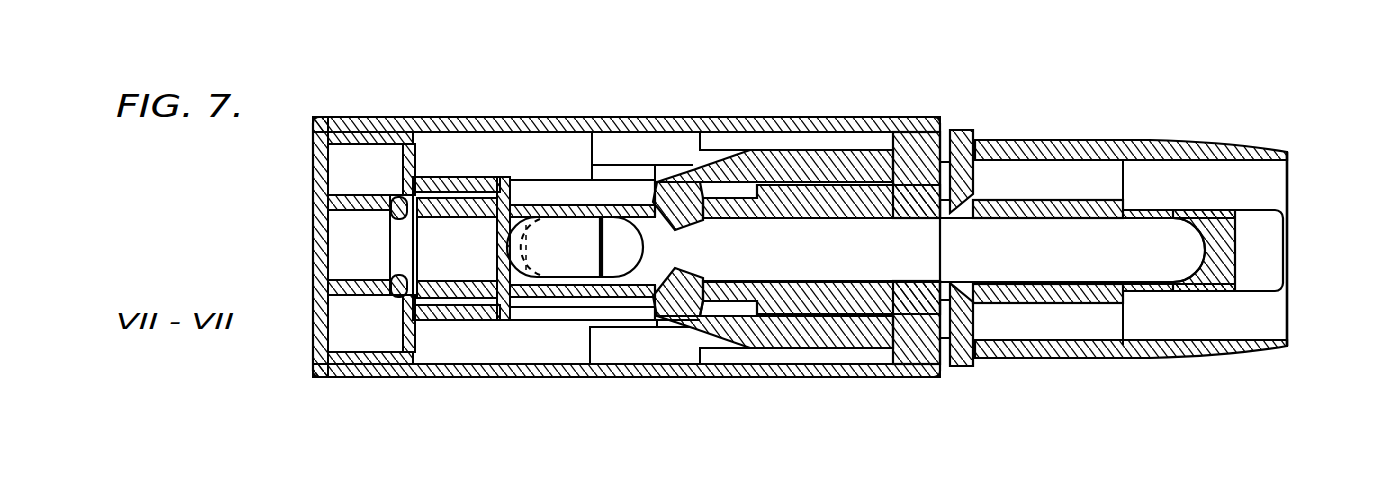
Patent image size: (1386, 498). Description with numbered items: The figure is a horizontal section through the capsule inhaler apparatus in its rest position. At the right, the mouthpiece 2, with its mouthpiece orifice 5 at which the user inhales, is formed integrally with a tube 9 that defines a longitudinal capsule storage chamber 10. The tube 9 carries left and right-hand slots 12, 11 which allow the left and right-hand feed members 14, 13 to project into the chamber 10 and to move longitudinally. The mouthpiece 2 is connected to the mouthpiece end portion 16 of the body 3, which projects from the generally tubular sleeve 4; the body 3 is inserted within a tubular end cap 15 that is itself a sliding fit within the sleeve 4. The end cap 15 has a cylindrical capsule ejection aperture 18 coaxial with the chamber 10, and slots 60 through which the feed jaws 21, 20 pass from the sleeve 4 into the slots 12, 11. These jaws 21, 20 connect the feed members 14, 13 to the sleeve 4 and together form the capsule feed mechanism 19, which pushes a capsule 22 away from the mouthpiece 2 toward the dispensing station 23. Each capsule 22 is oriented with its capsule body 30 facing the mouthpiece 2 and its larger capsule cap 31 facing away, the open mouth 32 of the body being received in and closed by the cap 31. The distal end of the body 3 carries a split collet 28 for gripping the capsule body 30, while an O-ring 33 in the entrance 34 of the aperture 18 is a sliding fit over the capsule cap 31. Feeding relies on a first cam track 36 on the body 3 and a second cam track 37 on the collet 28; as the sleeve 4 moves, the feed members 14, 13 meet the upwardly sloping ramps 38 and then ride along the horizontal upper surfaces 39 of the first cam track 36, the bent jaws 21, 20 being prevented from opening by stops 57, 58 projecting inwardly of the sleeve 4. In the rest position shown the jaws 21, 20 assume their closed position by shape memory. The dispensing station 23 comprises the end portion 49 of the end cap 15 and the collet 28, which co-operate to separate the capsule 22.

The mouthpiece 2 is at (1186, 150).
The body 3 is at (1092, 150).
The sleeve 4 is at (590, 165).
The mouthpiece orifice 5 is at (1290, 213).
The tube 9 is at (1003, 200).
The capsule storage chamber 10 is at (1012, 222).
The right-hand slot 11 is at (947, 250).
The left-hand slot 12 is at (568, 196).
The right-hand feed member 13 is at (680, 300).
The left-hand feed member 14 is at (670, 132).
The end cap 15 is at (416, 378).
The mouthpiece end portion 16 is at (1105, 357).
The capsule ejection aperture 18 is at (342, 233).
The capsule feed mechanism 19 is at (724, 352).
The right feed jaw 20 is at (815, 349).
The left feed jaw 21 is at (825, 165).
The capsule 22 is at (556, 213).
The dispensing station 23 is at (348, 112).
The collet 28 is at (422, 143).
The capsule body 30 is at (633, 345).
The capsule cap 31 is at (530, 345).
The open mouth 32 is at (523, 265).
The O-ring 33 is at (390, 207).
The entrance 34 is at (392, 255).
The first cam track 36 is at (515, 185).
The second cam track 37 is at (438, 180).
The upwardly sloping ramps 38 is at (652, 180).
The horizontal upper surfaces 39 is at (528, 190).
The end portion 49 is at (338, 378).
The stop 57 is at (640, 350).
The stop 58 is at (700, 147).
The slots 60 is at (606, 160).